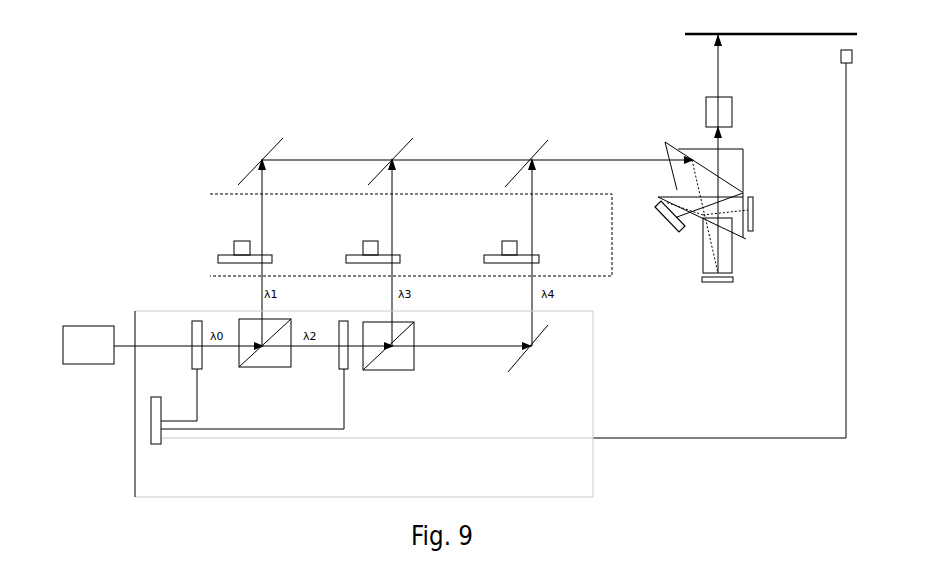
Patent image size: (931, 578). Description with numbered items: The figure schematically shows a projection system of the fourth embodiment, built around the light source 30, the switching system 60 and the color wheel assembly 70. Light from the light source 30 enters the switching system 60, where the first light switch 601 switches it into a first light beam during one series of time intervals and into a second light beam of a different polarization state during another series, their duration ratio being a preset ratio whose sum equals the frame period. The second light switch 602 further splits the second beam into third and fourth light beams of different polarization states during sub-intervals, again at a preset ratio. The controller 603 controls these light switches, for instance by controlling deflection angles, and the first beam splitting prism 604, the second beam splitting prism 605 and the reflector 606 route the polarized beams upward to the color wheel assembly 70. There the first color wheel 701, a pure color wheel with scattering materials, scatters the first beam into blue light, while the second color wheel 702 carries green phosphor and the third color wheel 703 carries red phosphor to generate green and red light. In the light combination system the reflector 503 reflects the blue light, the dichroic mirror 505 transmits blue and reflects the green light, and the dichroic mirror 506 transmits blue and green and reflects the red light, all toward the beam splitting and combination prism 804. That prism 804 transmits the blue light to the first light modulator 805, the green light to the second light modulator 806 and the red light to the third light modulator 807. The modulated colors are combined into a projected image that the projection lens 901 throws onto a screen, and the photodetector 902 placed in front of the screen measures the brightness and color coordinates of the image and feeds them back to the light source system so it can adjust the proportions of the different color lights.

The light source 30 is at (87, 325).
The switching system 60 is at (145, 315).
The color wheel assembly 70 is at (217, 195).
The reflector 503 is at (268, 152).
The dichroic mirror 505 is at (397, 152).
The dichroic mirror 506 is at (535, 152).
The first color wheel 701 is at (265, 257).
The second color wheel 702 is at (397, 257).
The third color wheel 703 is at (535, 257).
The first light switch 601 is at (198, 368).
The second light switch 602 is at (345, 370).
The controller 603 is at (154, 443).
The first beam splitting prism 604 is at (268, 363).
The second beam splitting prism 605 is at (408, 363).
The reflector 606 is at (518, 362).
The beam splitting and combination prism 804 is at (745, 192).
The first light modulator 805 is at (677, 232).
The second light modulator 806 is at (725, 282).
The third light modulator 807 is at (753, 232).
The projection lens 901 is at (730, 104).
The photodetector 902 is at (842, 63).